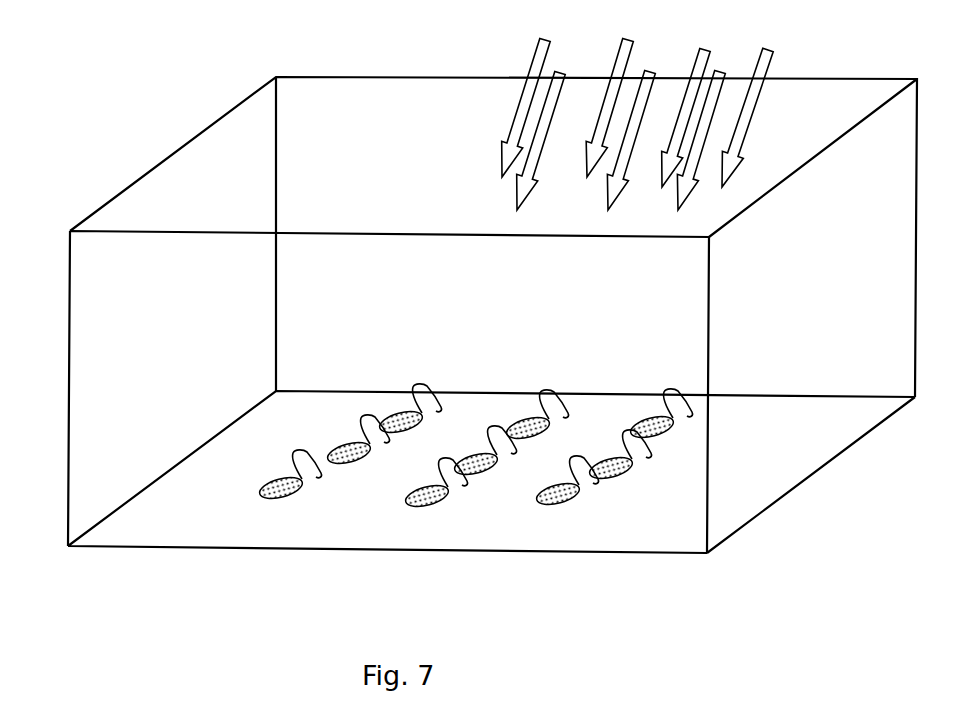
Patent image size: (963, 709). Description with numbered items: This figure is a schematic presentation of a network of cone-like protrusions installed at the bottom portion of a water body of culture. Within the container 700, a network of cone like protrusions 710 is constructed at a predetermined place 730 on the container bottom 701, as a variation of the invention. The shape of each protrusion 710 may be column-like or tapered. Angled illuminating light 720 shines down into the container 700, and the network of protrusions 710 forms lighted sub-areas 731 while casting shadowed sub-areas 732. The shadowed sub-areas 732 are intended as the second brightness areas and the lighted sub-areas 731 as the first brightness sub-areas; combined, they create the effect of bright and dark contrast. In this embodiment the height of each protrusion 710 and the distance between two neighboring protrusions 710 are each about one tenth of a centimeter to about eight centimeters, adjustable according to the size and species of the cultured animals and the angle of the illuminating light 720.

The container 700 is at (230, 108).
The container bottom 701 is at (167, 503).
The cone like protrusion 710 is at (633, 455).
The angled illuminating light 720 is at (530, 85).
The predetermined place 730 is at (587, 504).
The lighted sub-areas 731 is at (503, 477).
The shadowed sub-areas 732 is at (432, 505).